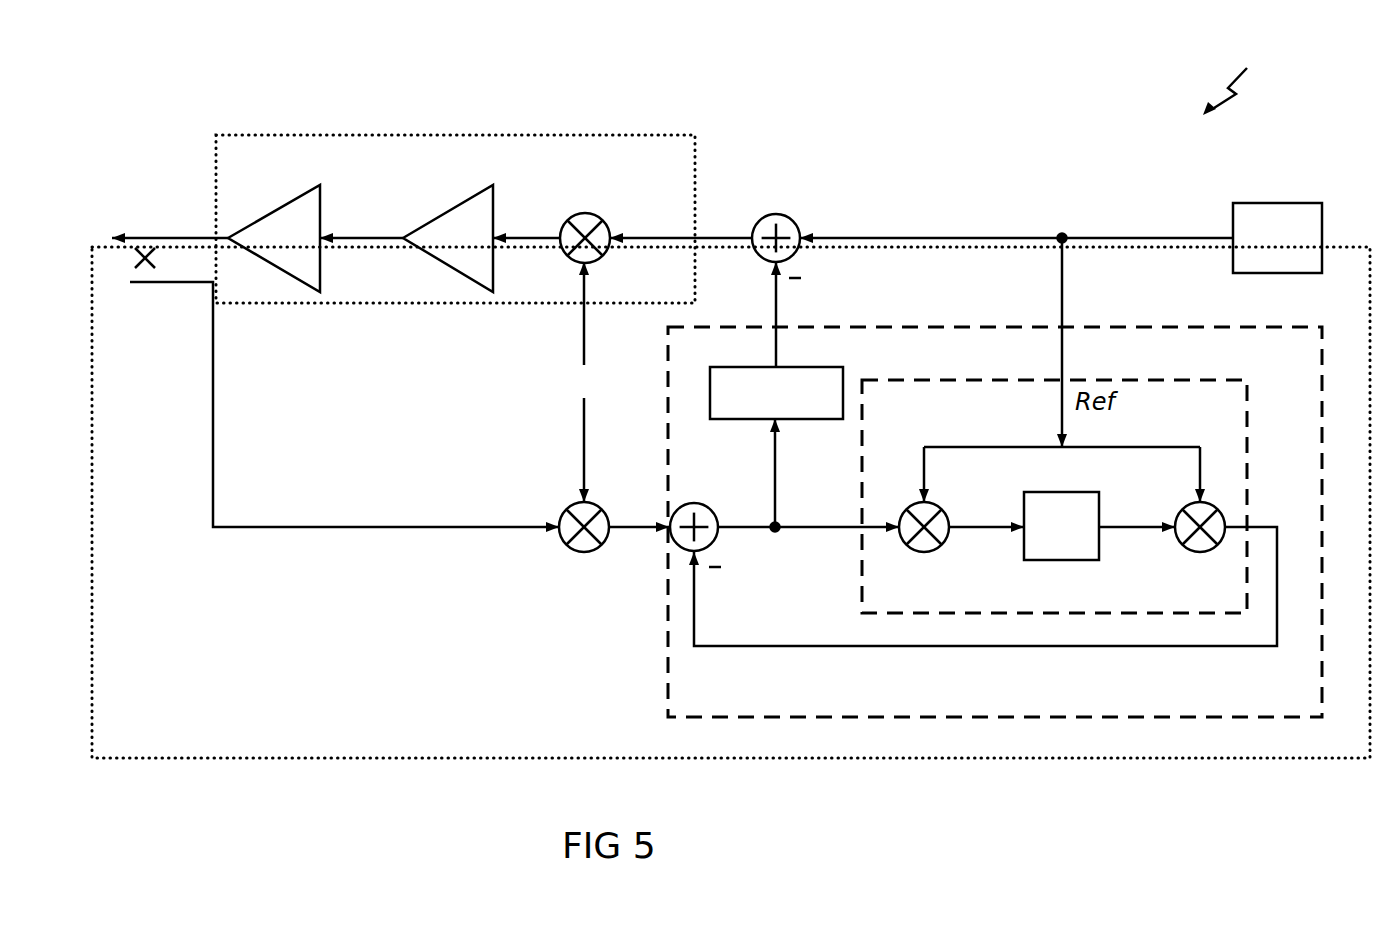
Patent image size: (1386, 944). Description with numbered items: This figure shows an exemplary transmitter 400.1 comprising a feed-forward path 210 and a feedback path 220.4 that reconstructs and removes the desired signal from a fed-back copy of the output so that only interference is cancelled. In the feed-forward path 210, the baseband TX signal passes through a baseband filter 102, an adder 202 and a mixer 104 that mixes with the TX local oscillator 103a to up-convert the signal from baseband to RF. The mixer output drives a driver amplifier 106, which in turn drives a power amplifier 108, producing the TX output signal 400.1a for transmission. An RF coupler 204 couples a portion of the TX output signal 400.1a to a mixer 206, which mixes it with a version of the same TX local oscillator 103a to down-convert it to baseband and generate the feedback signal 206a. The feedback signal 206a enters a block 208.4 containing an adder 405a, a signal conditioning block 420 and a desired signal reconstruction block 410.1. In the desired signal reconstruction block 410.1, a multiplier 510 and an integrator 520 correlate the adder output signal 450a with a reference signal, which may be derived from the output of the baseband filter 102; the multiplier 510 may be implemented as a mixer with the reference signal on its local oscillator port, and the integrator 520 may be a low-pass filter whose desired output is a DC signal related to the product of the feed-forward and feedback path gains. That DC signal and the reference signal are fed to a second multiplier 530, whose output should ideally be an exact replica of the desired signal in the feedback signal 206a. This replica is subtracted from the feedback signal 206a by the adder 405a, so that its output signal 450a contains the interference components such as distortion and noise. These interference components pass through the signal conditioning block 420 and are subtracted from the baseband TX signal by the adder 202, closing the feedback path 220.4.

The transmitter 400.1 is at (1258, 83).
The TX output signal 400.1a is at (147, 236).
The baseband filter 102 is at (1275, 203).
The TX local oscillator 103a is at (586, 342).
The mixer 104 is at (588, 213).
The driver amplifier 106 is at (460, 205).
The power amplifier 108 is at (285, 205).
The adder 202 is at (776, 214).
The RF coupler 204 is at (163, 283).
The mixer 206 is at (585, 553).
The feedback signal 206a is at (616, 535).
The interference cancellation block 208.4 is at (1237, 328).
The feed-forward path 210 is at (475, 133).
The feedback path 220.4 is at (514, 760).
The adder 405a is at (702, 500).
The desired signal reconstruction block 410.1 is at (1185, 380).
The signal conditioning block 420 is at (787, 367).
The output signal of the adder 450a is at (776, 535).
The multiplier 510 is at (925, 552).
The integrator 520 is at (1062, 561).
The second multiplier 530 is at (1203, 555).